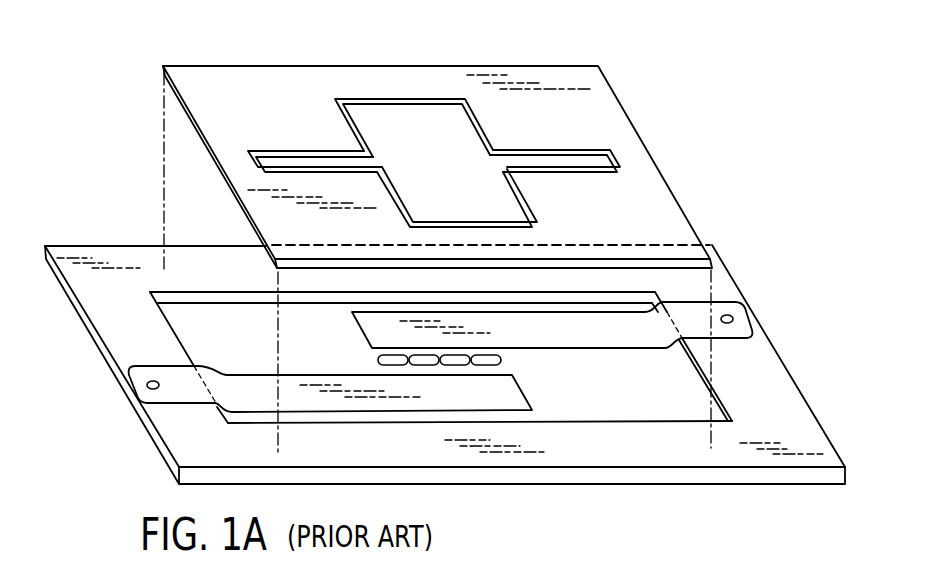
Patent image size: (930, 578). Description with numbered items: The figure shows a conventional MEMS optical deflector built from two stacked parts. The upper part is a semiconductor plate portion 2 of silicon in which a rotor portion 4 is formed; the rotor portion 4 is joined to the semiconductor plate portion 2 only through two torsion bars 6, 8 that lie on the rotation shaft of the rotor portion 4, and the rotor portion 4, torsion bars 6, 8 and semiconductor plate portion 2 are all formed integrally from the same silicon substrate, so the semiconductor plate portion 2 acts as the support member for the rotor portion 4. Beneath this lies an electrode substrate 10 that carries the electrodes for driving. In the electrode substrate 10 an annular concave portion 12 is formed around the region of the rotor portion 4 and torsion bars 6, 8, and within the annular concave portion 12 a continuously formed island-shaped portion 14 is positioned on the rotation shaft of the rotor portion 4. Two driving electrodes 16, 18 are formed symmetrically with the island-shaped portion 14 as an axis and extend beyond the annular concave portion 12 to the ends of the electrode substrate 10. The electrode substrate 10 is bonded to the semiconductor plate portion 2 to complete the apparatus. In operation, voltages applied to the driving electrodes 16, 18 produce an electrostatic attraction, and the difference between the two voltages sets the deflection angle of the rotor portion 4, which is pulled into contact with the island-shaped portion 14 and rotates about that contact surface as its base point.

The semiconductor plate portion 2 is at (663, 202).
The rotor portion 4 is at (443, 174).
The torsion bar 6 is at (293, 151).
The torsion bar 8 is at (546, 150).
The electrode substrate 10 is at (658, 455).
The annular concave portion 12 is at (310, 351).
The island-shaped portion 14 is at (514, 364).
The driving electrode 16 is at (167, 376).
The driving electrode 18 is at (743, 332).